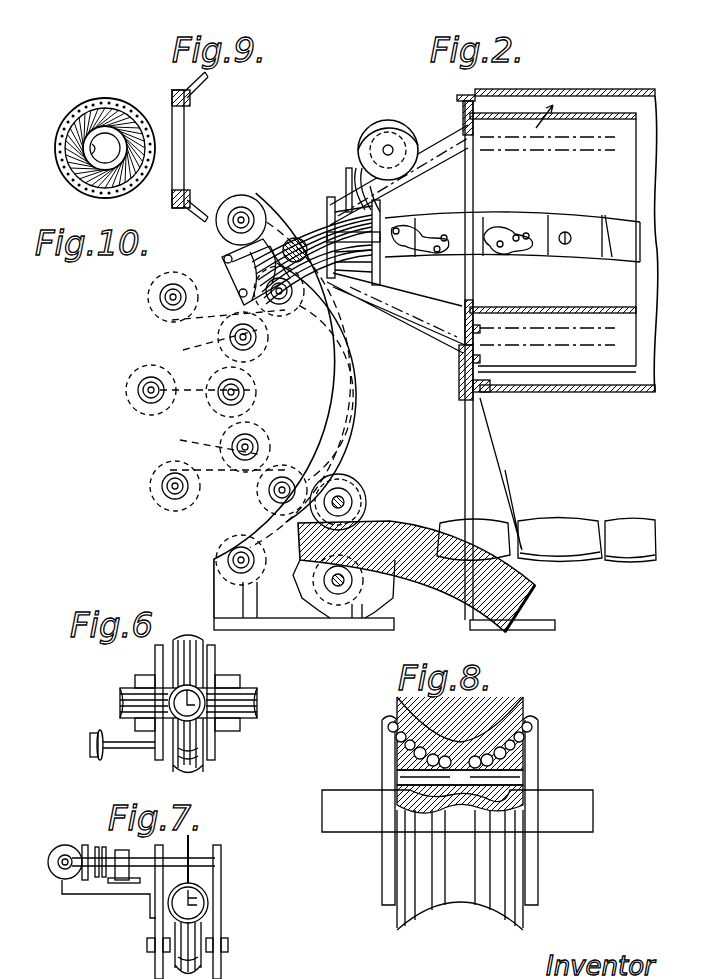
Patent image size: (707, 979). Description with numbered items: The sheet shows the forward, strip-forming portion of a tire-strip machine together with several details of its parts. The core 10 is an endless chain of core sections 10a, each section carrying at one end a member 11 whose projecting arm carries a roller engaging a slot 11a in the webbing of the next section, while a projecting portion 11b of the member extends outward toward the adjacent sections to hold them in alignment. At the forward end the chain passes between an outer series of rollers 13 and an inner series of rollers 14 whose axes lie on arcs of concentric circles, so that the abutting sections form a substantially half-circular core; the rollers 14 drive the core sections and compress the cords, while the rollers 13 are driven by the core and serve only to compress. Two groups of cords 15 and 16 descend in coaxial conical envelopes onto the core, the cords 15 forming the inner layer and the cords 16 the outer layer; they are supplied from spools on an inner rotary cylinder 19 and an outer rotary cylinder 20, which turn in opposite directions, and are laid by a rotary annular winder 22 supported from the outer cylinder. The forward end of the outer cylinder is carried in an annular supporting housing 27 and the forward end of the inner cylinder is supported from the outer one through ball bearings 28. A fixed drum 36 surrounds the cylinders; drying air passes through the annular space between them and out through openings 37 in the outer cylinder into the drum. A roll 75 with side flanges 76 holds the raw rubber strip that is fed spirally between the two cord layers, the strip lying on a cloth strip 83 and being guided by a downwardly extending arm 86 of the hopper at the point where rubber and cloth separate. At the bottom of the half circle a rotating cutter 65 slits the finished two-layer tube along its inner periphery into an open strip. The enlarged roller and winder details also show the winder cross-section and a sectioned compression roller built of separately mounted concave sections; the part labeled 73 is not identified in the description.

In FIG. 9, the rotary annular winder 22 is at (118, 100).
In FIG. 2, the rotary annular winder 22 is at (328, 282).
In FIG. 9, the cords for outer layer 16 is at (80, 140).
In FIG. 10, the cords for outer layer 16 is at (326, 220).
In FIG. 9, the core 10 is at (68, 172).
In FIG. 2, the ball bearings 28 is at (505, 156).
In FIG. 2, the inner rotary cylinder 19 is at (547, 136).
In FIG. 2, the openings in outer cylinder 37 is at (550, 366).
In FIG. 2, the outer rotary cylinder 20 is at (520, 366).
In FIG. 2, the drum 36 is at (586, 392).
In FIG. 2, the annular supporting member or housing 27 is at (462, 402).
In FIG. 2, the cords for inner layer 15 is at (358, 300).
In FIG. 2, the roll 75 is at (412, 128).
In FIG. 2, the downwardly extending arm 86 is at (360, 172).
In FIG. 2, the strip of cloth 83 is at (346, 182).
In FIG. 2, the side flanges 76 is at (330, 215).
In FIG. 2, the member 11 is at (510, 258).
In FIG. 2, the slot 11a is at (478, 240).
In FIG. 2, the projecting portion 11b is at (522, 230).
In FIG. 2, the core sections 10a is at (578, 218).
In FIG. 10, the core sections 10a is at (570, 515).
In FIG. 10, the outer rollers 13 is at (244, 204).
In FIG. 10, the inner rollers 14 is at (290, 318).
In FIG. 10, the rotating cutter 65 is at (346, 482).
In FIG. 6, the roller hub 73 is at (173, 694).